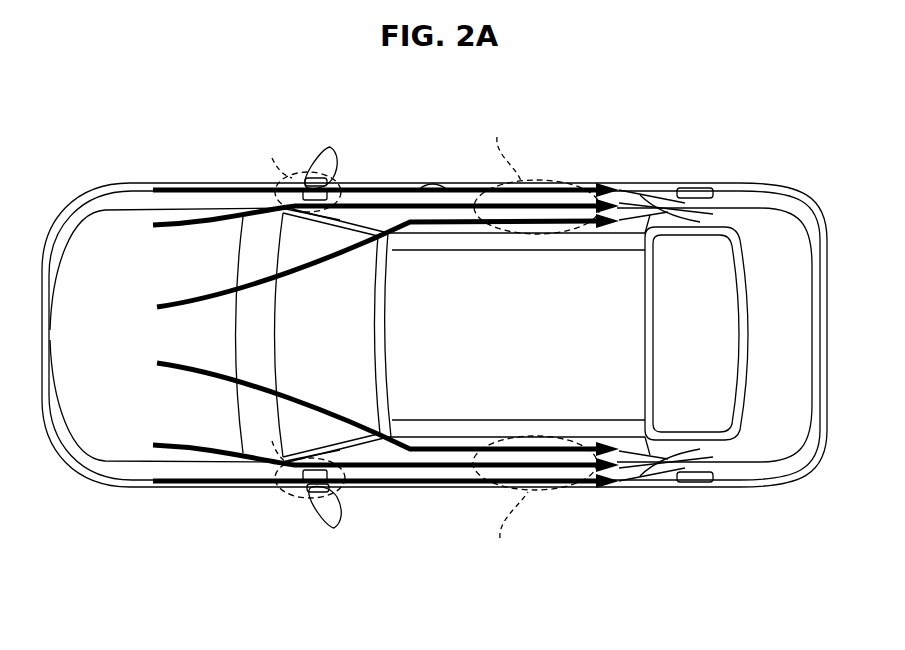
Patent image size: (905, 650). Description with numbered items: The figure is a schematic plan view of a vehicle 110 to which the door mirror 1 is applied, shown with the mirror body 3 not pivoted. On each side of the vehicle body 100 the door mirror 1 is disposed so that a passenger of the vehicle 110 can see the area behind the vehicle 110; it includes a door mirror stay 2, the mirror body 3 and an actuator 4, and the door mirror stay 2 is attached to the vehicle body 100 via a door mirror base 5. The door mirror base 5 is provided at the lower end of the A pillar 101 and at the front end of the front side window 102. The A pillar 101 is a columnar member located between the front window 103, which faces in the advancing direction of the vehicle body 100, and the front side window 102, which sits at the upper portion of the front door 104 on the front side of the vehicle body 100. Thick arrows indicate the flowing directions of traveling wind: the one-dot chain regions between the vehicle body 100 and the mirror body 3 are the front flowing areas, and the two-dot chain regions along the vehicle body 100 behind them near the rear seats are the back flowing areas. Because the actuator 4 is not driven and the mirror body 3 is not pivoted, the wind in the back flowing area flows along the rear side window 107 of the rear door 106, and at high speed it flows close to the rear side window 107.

The door mirror 1 is at (365, 600).
The door mirror stay 2 is at (340, 470).
The mirror body 3 is at (332, 541).
The actuator 4 is at (309, 508).
The door mirror base 5 is at (273, 470).
The vehicle body 100 is at (120, 500).
The A pillar 101 is at (336, 226).
The front side window 102 is at (430, 212).
The front window 103 is at (363, 370).
The front door 104 is at (388, 172).
The rear door 106 is at (657, 205).
The rear side window 107 is at (548, 212).
The vehicle 110 is at (220, 112).